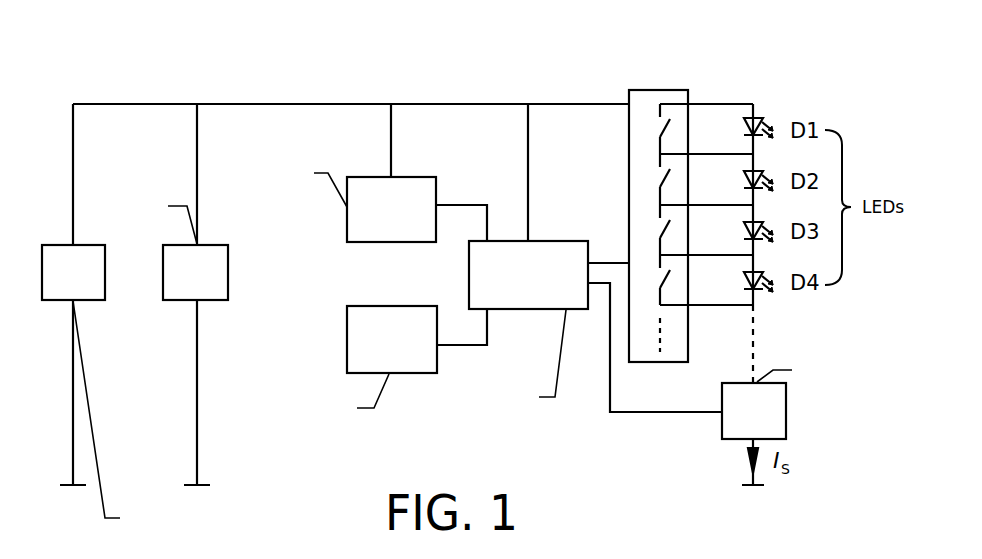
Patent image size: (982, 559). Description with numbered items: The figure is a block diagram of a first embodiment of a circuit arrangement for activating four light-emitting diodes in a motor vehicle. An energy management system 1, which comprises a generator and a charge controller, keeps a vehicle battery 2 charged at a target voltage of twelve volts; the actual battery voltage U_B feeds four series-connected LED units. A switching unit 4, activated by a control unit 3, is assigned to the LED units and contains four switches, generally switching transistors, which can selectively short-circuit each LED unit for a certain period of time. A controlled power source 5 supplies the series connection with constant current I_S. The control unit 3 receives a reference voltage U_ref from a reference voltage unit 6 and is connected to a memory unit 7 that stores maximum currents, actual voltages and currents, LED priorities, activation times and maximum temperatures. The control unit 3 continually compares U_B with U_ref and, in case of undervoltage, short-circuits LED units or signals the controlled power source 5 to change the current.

The energy management system 1 is at (137, 397).
The vehicle battery 2 is at (185, 248).
The control unit 3 is at (528, 329).
The switching unit 4 is at (644, 104).
The controlled power source 5 is at (815, 394).
The reference voltage unit 6 is at (324, 197).
The memory unit 7 is at (362, 366).